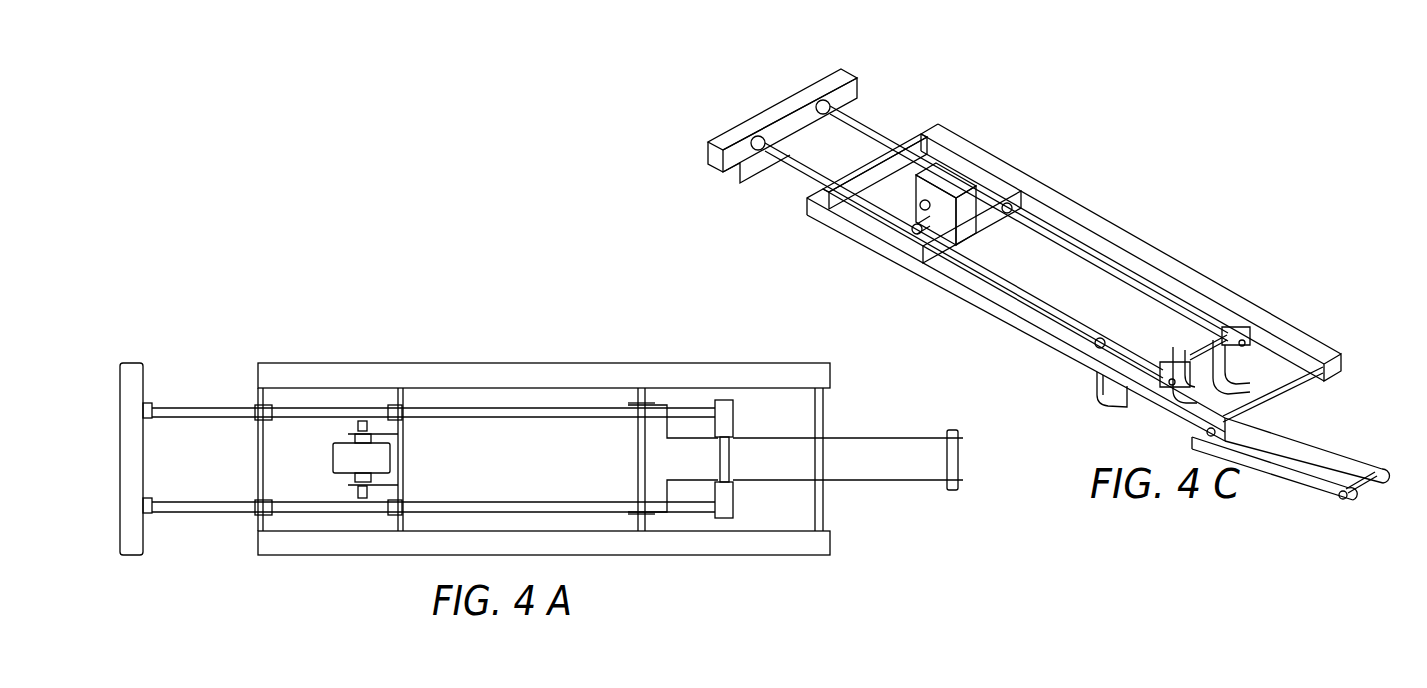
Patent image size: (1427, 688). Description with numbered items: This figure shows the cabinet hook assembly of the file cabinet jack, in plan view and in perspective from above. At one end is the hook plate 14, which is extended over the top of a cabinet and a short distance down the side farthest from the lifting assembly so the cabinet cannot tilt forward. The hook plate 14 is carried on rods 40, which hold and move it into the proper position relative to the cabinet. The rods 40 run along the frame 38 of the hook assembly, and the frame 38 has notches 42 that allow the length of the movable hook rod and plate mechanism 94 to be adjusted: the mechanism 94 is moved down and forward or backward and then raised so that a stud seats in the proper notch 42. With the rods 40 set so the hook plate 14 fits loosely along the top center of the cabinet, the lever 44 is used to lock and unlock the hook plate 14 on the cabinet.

In FIG. 4A, the hook plate 14 is at (132, 366).
In FIG. 4C, the hook plate 14 is at (724, 141).
In FIG. 4A, the rods 40 is at (207, 405).
In FIG. 4C, the rods 40 is at (873, 132).
In FIG. 4A, the frame for hook assembly 38 is at (578, 370).
In FIG. 4C, the frame for hook assembly 38 is at (1160, 255).
In FIG. 4C, the notches 42 is at (1125, 210).
In FIG. 4A, the movable hook rod and plate mechanism 94 is at (727, 407).
In FIG. 4C, the movable hook rod and plate mechanism 94 is at (1227, 343).
In FIG. 4A, the lever 44 is at (958, 455).
In FIG. 4C, the lever 44 is at (1362, 490).